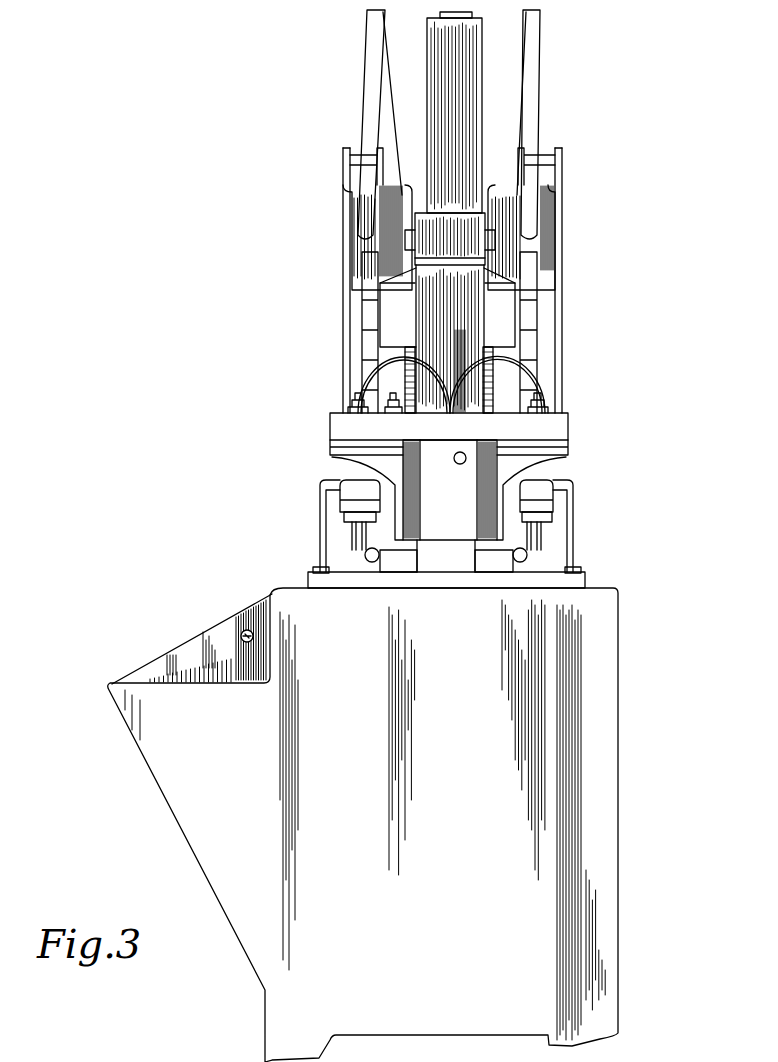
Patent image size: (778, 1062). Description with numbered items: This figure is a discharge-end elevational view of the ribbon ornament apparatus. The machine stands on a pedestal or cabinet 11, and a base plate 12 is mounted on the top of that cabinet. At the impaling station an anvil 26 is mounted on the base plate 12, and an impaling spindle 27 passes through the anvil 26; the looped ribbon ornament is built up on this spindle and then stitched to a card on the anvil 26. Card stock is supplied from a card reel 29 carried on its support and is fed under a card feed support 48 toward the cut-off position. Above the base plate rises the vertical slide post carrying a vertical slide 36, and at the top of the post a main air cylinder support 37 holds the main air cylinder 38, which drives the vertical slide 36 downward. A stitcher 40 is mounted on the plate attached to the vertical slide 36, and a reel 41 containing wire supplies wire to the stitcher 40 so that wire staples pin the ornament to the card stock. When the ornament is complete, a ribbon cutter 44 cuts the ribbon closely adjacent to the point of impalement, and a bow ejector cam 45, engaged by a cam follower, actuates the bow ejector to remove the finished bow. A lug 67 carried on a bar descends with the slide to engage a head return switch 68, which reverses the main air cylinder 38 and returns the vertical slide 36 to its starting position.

The pedestal or cabinet 11 is at (247, 605).
The base plate 12 is at (314, 574).
The anvil 26 is at (530, 554).
The impaling spindle 27 is at (522, 528).
The card reel 29 is at (551, 176).
The vertical slide 36 is at (473, 318).
The main air cylinder support 37 is at (490, 237).
The main air cylinder 38 is at (440, 52).
The stitcher 40 is at (535, 343).
The reel 41 is at (552, 210).
The ribbon cutter 44 is at (553, 496).
The bow ejector cam 45 is at (533, 510).
The card feed support 48 is at (540, 460).
The lug 67 is at (375, 290).
The head return switch 68 is at (365, 392).